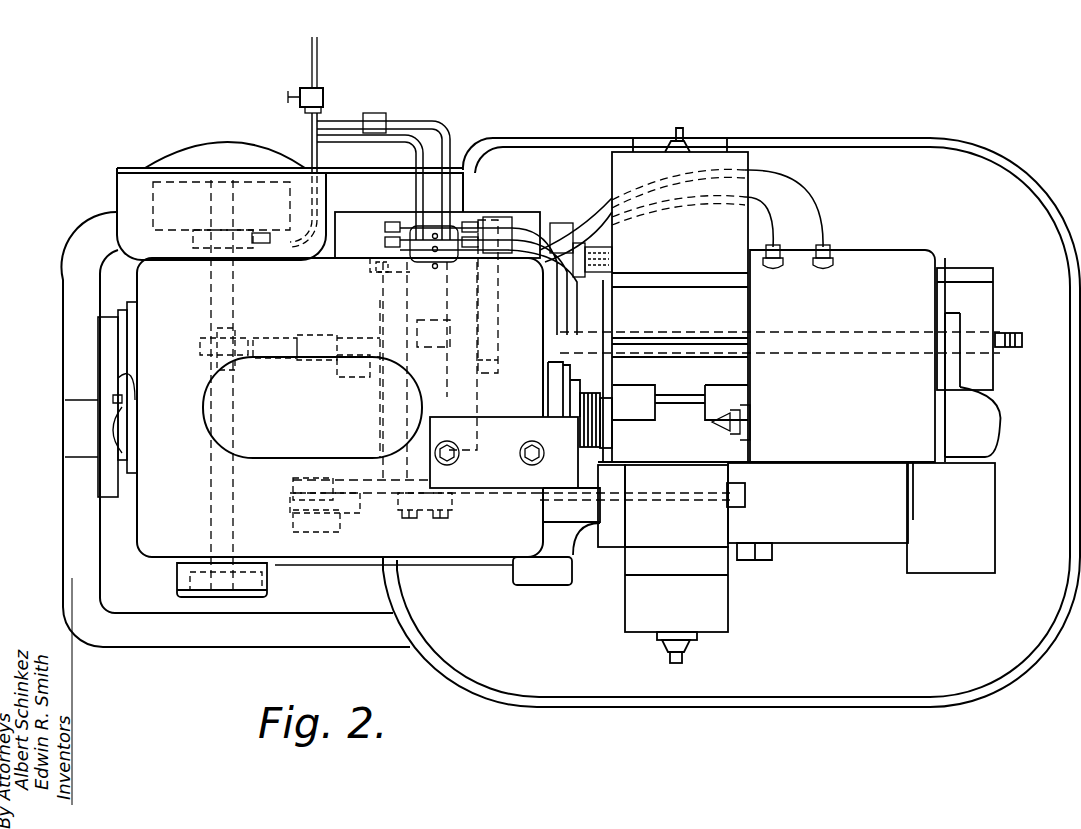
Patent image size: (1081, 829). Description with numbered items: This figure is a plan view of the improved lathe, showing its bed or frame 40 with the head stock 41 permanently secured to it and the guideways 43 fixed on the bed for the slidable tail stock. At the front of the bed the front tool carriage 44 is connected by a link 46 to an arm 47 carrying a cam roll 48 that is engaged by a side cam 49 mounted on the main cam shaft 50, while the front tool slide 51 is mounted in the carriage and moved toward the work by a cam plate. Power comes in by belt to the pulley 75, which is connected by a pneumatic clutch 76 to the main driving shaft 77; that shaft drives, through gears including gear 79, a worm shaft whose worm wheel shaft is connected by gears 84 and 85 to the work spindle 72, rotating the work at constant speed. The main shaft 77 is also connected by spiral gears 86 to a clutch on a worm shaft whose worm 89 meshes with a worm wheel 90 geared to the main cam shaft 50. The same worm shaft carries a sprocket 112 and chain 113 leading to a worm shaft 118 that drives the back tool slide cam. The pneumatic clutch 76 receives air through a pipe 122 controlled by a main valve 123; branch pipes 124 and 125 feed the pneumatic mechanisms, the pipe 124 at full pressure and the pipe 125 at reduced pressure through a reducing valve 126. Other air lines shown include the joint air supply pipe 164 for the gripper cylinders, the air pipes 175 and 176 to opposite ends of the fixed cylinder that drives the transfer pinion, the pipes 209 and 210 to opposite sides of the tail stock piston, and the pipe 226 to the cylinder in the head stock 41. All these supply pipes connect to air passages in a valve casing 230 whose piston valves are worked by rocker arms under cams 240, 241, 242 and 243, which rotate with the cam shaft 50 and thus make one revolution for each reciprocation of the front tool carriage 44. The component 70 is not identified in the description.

The bed 40 is at (945, 140).
The head stock 41 is at (290, 427).
The guideways 43 is at (985, 290).
The front tool carriage 44 is at (816, 526).
The link 46 is at (512, 510).
The arm 47 is at (845, 448).
The cam roll 48 is at (293, 491).
The side cam 49 is at (350, 480).
The main cam shaft 50 is at (380, 428).
The front tool slide 51 is at (670, 618).
The shaft 70 is at (722, 425).
The work spindle 72 is at (605, 445).
The pulley 75 is at (150, 198).
The pneumatic clutch 76 is at (193, 236).
The main driving shaft 77 is at (211, 299).
The gear 79 is at (267, 587).
The gear 84 is at (447, 300).
The gear 85 is at (477, 404).
The spiral gears 86 is at (228, 326).
The worm 89 is at (323, 337).
The worm wheel 90 is at (283, 338).
The sprocket 112 is at (498, 371).
The chain 113 is at (498, 306).
The worm shaft 118 is at (598, 250).
The pipe 122 is at (312, 155).
The main valve 123 is at (318, 95).
The branch pipe 124 is at (370, 187).
The branch pipe 125 is at (426, 124).
The reducing valve 126 is at (377, 113).
The joint air supply pipe 164 is at (560, 327).
The air pipe 175 is at (577, 333).
The air pipe 176 is at (577, 320).
The pipe 209 is at (826, 214).
The pipe 210 is at (778, 236).
The pipe 226 is at (118, 377).
The valve casing 230 is at (505, 228).
The cam 240 is at (385, 243).
The cam 241 is at (370, 265).
The cam 242 is at (376, 272).
The cam 243 is at (385, 228).